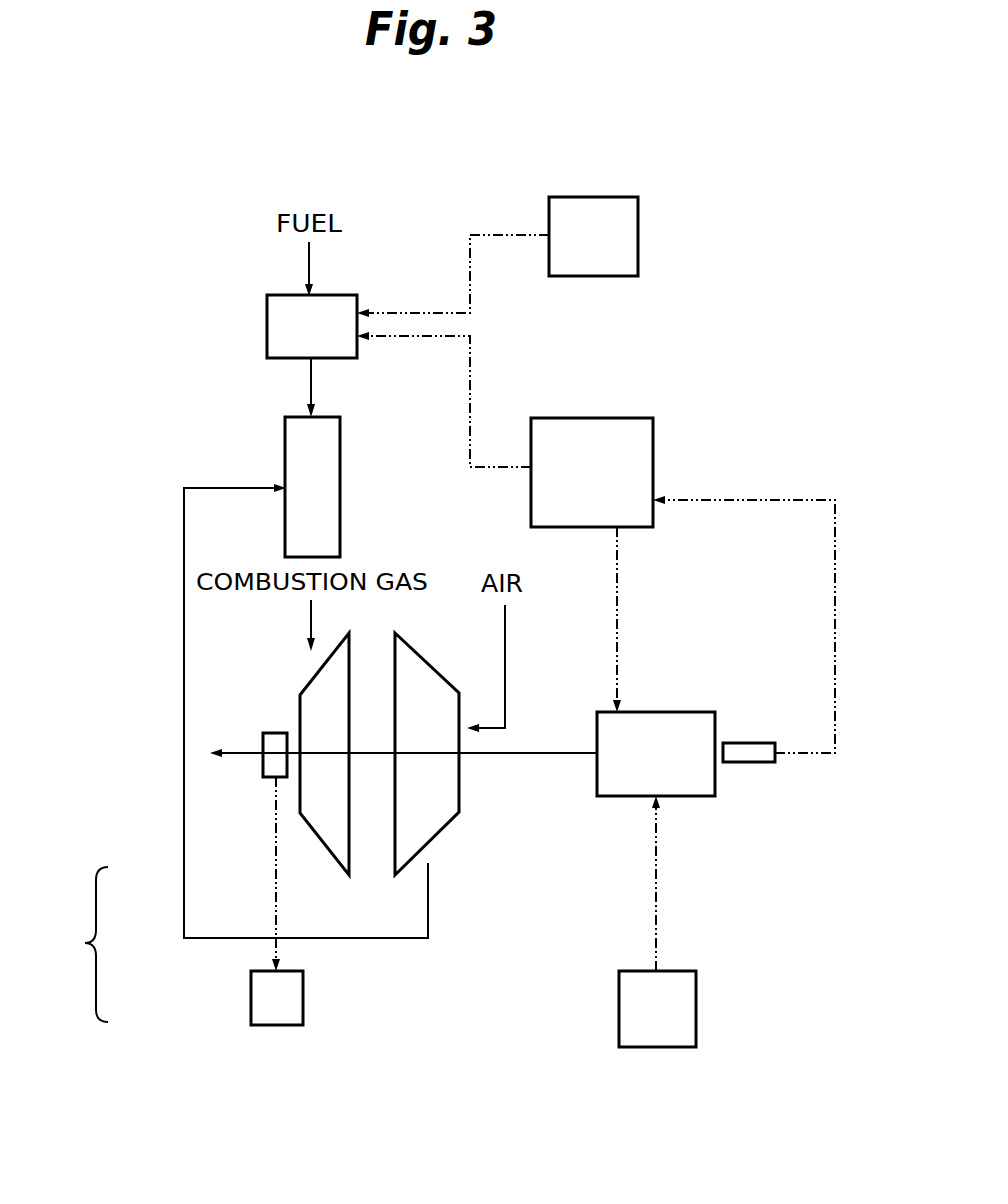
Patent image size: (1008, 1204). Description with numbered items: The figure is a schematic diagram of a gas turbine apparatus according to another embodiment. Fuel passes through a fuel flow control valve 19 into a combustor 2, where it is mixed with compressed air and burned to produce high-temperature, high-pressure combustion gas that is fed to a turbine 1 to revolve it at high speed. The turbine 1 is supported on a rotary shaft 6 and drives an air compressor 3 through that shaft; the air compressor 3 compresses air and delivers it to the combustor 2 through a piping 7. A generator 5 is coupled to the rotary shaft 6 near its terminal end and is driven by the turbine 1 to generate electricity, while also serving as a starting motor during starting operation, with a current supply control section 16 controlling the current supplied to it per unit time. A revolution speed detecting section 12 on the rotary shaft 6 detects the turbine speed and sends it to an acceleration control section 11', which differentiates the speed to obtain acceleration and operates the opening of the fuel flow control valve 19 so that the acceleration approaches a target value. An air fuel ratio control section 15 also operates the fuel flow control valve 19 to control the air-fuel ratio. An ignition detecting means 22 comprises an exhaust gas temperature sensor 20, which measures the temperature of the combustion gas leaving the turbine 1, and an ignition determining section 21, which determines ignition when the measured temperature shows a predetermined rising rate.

The turbine 1 is at (325, 845).
The combustor 2 is at (340, 463).
The air compressor 3 is at (445, 832).
The generator 5 is at (664, 712).
The rotary shaft 6 is at (536, 753).
The piping 7 is at (377, 938).
The acceleration control section 11' is at (505, 519).
The revolution speed detecting section 12 is at (751, 762).
The air fuel ratio control section 15 is at (595, 197).
The current supply control section 16 is at (696, 1001).
The fuel flow control valve 19 is at (267, 333).
The exhaust gas temperature sensor 20 is at (262, 762).
The ignition determining section 21 is at (251, 1000).
The ignition detecting means 22 is at (76, 944).